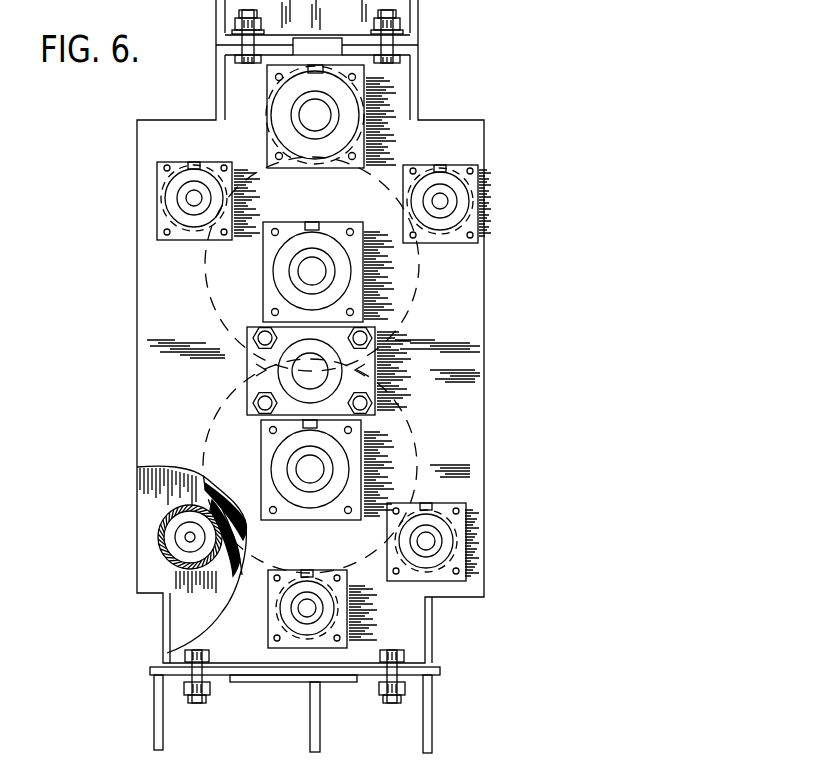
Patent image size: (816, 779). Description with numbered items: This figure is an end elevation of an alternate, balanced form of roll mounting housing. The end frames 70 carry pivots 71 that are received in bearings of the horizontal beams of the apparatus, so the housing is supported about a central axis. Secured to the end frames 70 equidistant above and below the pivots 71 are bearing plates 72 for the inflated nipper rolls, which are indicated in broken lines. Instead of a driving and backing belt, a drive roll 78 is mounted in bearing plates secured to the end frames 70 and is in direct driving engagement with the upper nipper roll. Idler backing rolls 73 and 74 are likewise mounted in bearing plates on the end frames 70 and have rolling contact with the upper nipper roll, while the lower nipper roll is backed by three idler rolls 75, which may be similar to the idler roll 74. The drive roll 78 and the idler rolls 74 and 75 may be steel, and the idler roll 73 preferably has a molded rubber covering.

The end frame 70 is at (140, 408).
The pivot 71 is at (297, 372).
The bearing plate 72 is at (263, 273).
The idler backing roll 73 is at (463, 240).
The idler backing roll 74 is at (166, 208).
The idler roll 75 is at (160, 557).
The drive roll 78 is at (272, 142).